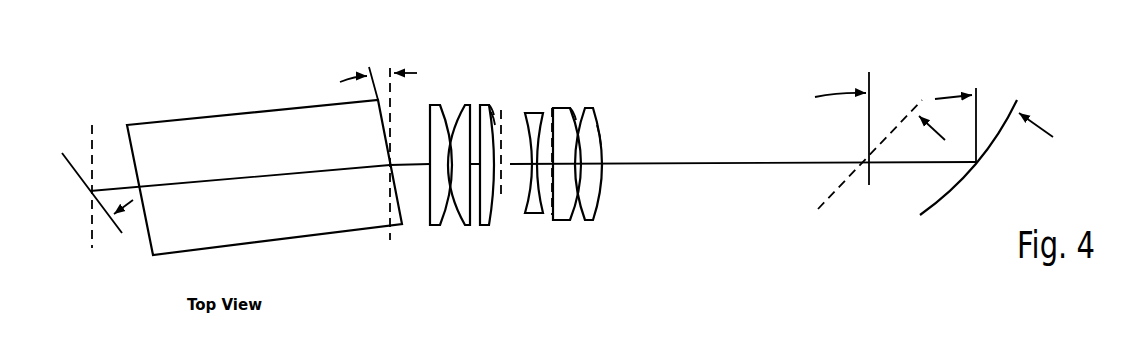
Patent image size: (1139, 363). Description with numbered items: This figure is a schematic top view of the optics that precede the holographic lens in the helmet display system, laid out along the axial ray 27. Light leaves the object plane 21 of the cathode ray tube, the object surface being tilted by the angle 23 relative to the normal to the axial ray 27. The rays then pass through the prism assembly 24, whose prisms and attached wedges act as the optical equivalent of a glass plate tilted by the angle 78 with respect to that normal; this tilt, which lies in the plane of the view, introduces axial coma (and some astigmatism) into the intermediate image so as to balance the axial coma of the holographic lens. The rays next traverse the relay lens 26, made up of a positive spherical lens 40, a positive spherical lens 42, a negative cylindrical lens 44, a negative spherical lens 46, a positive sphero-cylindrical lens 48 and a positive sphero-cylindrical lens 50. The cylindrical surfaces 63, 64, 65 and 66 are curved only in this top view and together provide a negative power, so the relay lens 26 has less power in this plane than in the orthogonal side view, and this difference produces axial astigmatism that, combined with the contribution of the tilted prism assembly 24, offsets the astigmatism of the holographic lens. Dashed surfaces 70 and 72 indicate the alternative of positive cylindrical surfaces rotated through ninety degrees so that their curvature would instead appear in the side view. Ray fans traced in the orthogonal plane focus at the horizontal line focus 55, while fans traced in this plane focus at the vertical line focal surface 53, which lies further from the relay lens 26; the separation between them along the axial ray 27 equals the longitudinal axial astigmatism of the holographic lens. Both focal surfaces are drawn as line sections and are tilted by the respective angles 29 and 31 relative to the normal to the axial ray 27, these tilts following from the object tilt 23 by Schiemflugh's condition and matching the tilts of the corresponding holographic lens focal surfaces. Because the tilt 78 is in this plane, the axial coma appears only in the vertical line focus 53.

The object plane 21 is at (72, 160).
The angle 23 is at (89, 228).
The prism assembly 24 is at (243, 113).
The relay lens 26 is at (527, 41).
The axial ray 27 is at (687, 164).
The angle 29 is at (887, 110).
The angle 31 is at (991, 108).
The positive spherical lens 40 is at (433, 226).
The positive spherical lens 42 is at (467, 226).
The negative cylindrical lens 44 is at (488, 226).
The negative spherical lens 46 is at (536, 214).
The positive sphero-cylindrical lens 48 is at (558, 221).
The positive sphero-cylindrical lens 50 is at (588, 221).
The vertical line focal surface 53 is at (992, 145).
The horizontal line focus 55 is at (825, 204).
The cylindrical surface 63 is at (491, 106).
The cylindrical surface 64 is at (497, 200).
The cylindrical surface 65 is at (567, 110).
The cylindrical surface 66 is at (598, 132).
The dashed surface 70 is at (493, 117).
The dashed surface 72 is at (533, 116).
The angle 78 is at (378, 140).